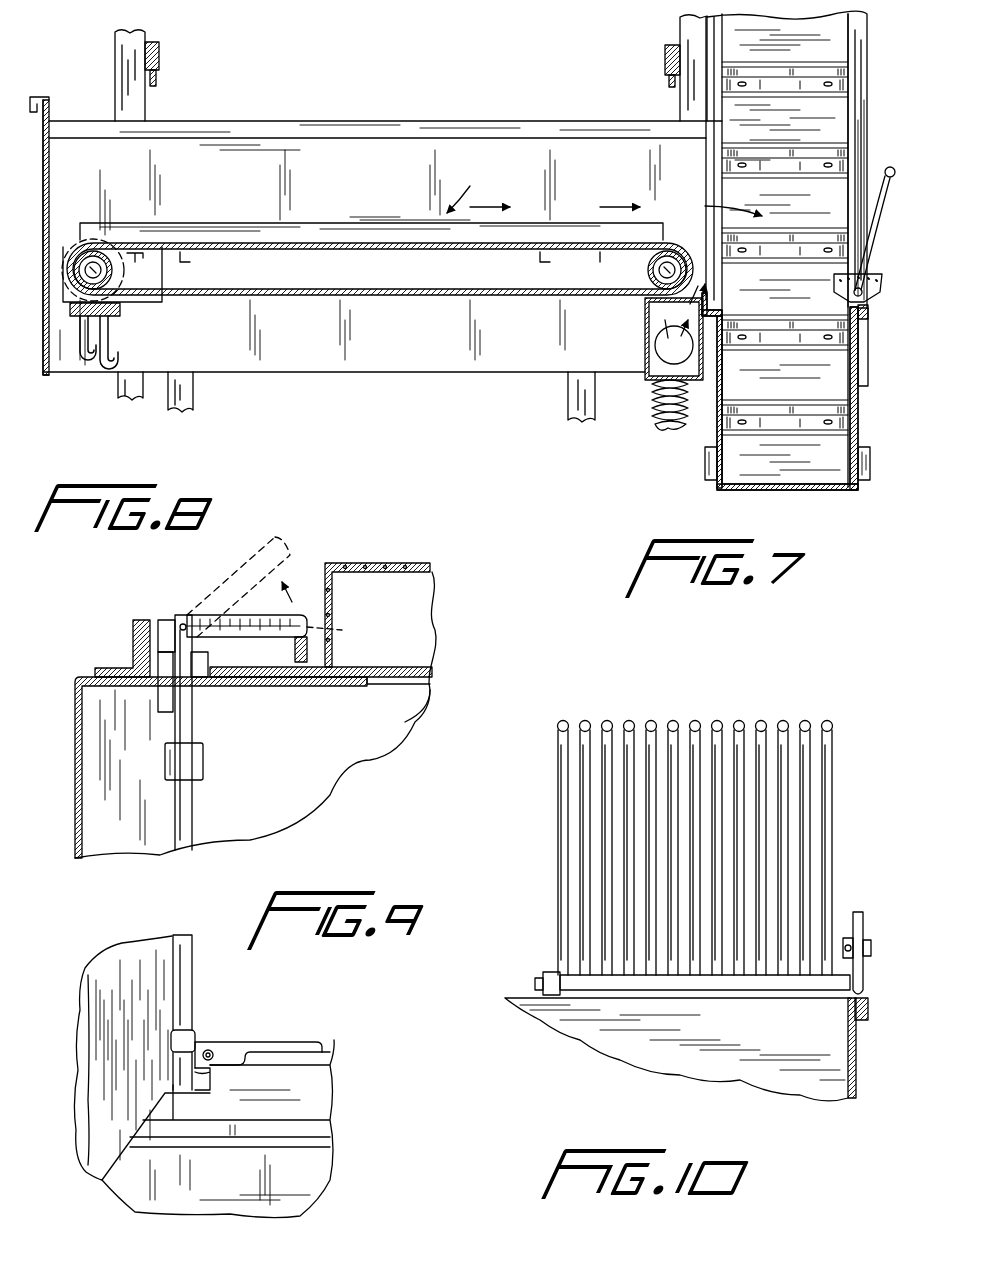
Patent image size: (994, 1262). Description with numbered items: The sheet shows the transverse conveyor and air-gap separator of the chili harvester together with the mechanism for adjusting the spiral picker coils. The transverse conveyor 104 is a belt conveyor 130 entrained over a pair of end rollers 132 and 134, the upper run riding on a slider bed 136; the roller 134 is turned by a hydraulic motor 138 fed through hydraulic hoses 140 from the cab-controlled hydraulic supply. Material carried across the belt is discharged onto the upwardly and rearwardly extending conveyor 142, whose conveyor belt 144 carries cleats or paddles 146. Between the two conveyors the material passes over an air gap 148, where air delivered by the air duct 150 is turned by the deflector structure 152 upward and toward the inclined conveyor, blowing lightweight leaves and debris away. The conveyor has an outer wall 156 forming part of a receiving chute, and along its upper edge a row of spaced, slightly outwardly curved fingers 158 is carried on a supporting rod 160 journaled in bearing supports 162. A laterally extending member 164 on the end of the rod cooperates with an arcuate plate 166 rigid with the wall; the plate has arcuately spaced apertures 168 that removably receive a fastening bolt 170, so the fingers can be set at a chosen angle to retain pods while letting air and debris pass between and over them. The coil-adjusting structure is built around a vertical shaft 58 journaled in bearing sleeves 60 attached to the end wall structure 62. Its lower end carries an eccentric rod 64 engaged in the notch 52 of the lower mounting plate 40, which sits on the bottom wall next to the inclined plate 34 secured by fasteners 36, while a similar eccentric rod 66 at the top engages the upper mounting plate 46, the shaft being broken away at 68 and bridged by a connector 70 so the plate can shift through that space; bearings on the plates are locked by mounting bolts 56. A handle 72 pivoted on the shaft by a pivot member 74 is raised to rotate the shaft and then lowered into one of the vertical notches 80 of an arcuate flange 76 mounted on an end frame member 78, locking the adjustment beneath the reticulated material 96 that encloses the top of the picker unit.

In FIG. 7, the transverse conveyor 104 is at (604, 231).
In FIG. 7, the belt conveyor 130 is at (390, 296).
In FIG. 7, the end roller 132 is at (640, 288).
In FIG. 7, the end roller 134 is at (112, 245).
In FIG. 7, the slider bed 136 is at (362, 252).
In FIG. 7, the hydraulic motor 138 is at (130, 302).
In FIG. 7, the hydraulic hoses 140 is at (82, 372).
In FIG. 7, the upwardly and rearwardly extending conveyor 142 is at (712, 488).
In FIG. 7, the conveyor belt 144 is at (725, 380).
In FIG. 7, the cleats or paddles 146 is at (778, 425).
In FIG. 7, the air gap 148 is at (700, 262).
In FIG. 7, the air duct 150 is at (655, 412).
In FIG. 7, the deflector structure 152 is at (645, 341).
In FIG. 7, the outer wall 156 is at (850, 425).
In FIG. 10, the outer wall 156 is at (720, 1070).
In FIG. 7, the fingers 158 is at (866, 175).
In FIG. 10, the fingers 158 is at (585, 835).
In FIG. 7, the laterally extending member 164 is at (855, 268).
In FIG. 10, the laterally extending member 164 is at (858, 910).
In FIG. 7, the arcuate plate 166 is at (845, 303).
In FIG. 10, the arcuate plate 166 is at (845, 982).
In FIG. 7, the arcuately spaced apertures 168 is at (834, 282).
In FIG. 10, the fastening bolt 170 is at (830, 977).
In FIG. 10, the supporting rod 160 is at (612, 986).
In FIG. 10, the bearing supports 162 is at (540, 962).
In FIG. 8, the mounting plate 46 is at (400, 667).
In FIG. 8, the mounting bolts 56 is at (192, 814).
In FIG. 8, the bearing sleeves 60 is at (203, 762).
In FIG. 9, the bearing sleeves 60 is at (195, 1033).
In FIG. 8, the end wall structure 62 is at (78, 678).
In FIG. 8, the eccentric rod 66 is at (210, 665).
In FIG. 8, the broken-away portion 68 is at (173, 690).
In FIG. 8, the connector 70 is at (166, 620).
In FIG. 8, the handle 72 is at (290, 545).
In FIG. 8, the pivot member 74 is at (183, 615).
In FIG. 8, the arcuate flange 76 is at (305, 662).
In FIG. 8, the end frame member 78 is at (135, 625).
In FIG. 8, the vertical notches 80 is at (338, 639).
In FIG. 8, the reticulated material 96 is at (430, 567).
In FIG. 9, the inclined plate 34 is at (320, 1040).
In FIG. 9, the fasteners 36 is at (213, 1052).
In FIG. 9, the mounting plate 40 is at (325, 1078).
In FIG. 9, the notch 52 is at (168, 1084).
In FIG. 9, the shaft 58 is at (183, 935).
In FIG. 9, the eccentric rod 64 is at (212, 1080).